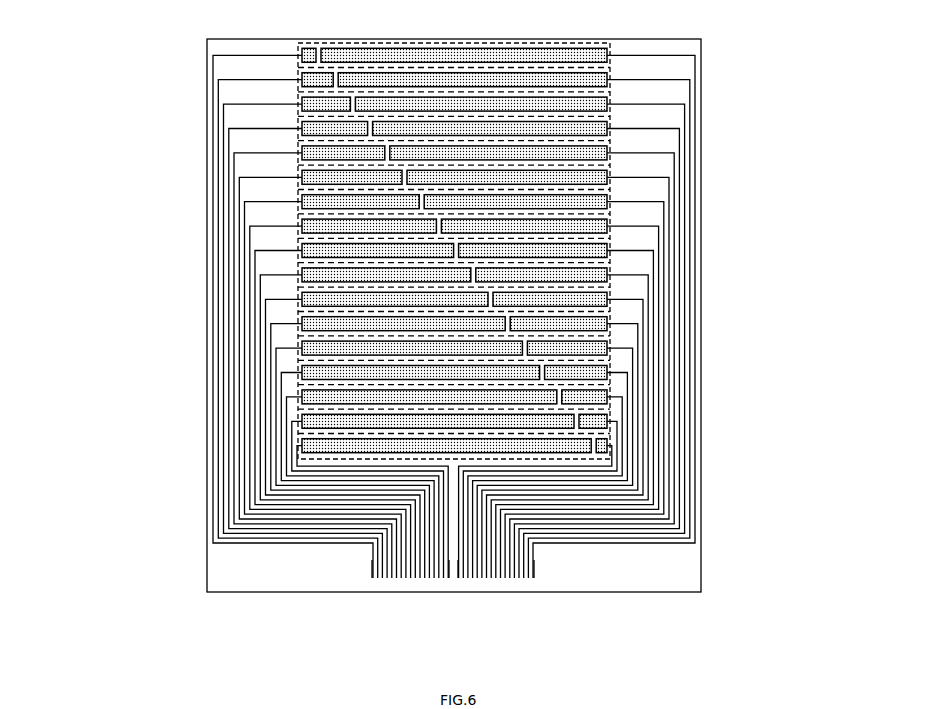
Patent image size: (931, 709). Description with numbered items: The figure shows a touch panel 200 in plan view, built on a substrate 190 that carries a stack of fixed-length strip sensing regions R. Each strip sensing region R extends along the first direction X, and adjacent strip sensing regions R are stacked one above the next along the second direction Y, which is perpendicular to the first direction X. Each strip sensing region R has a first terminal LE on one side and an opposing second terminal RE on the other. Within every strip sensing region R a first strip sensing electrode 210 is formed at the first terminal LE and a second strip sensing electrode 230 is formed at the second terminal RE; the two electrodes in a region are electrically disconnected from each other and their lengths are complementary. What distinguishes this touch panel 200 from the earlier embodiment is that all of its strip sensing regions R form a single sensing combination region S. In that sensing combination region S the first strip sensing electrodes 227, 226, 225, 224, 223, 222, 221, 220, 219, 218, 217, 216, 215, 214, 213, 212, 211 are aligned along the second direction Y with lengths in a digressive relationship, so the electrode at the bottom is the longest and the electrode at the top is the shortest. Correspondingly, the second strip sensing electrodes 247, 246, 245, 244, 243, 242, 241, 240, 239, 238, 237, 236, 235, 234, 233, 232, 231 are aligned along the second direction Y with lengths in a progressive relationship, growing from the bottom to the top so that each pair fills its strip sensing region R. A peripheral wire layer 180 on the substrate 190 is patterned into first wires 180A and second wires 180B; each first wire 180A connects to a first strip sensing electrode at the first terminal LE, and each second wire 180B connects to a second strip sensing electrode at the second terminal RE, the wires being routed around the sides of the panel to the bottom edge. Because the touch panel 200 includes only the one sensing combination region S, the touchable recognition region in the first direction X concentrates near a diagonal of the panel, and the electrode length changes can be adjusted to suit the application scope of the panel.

The touch panel 200 is at (782, 21).
The substrate 190 is at (702, 570).
The first strip sensing electrode 210 is at (362, 313).
The second strip sensing electrode 230 is at (548, 313).
The first strip sensing electrode 211 is at (300, 55).
The first strip sensing electrode 212 is at (300, 80).
The first strip sensing electrode 213 is at (300, 104).
The first strip sensing electrode 214 is at (300, 128).
The first strip sensing electrode 215 is at (300, 153).
The first strip sensing electrode 216 is at (300, 177).
The first strip sensing electrode 217 is at (300, 202).
The first strip sensing electrode 218 is at (300, 226).
The first strip sensing electrode 219 is at (300, 250).
The first strip sensing electrode 220 is at (300, 275).
The first strip sensing electrode 221 is at (300, 299).
The first strip sensing electrode 222 is at (300, 324).
The first strip sensing electrode 223 is at (300, 348).
The first strip sensing electrode 224 is at (300, 372).
The first strip sensing electrode 225 is at (300, 397).
The first strip sensing electrode 226 is at (300, 421).
The first strip sensing electrode 227 is at (300, 446).
The second strip sensing electrode 231 is at (608, 55).
The second strip sensing electrode 232 is at (608, 80).
The second strip sensing electrode 233 is at (608, 104).
The second strip sensing electrode 234 is at (608, 128).
The second sensing electrode 235 is at (608, 153).
The second strip sensing electrode 236 is at (608, 177).
The second strip sensing electrode 237 is at (608, 202).
The second strip sensing electrode 238 is at (608, 226).
The second strip sensing electrode 239 is at (608, 250).
The second strip sensing electrode 240 is at (608, 275).
The second strip sensing electrode 241 is at (608, 299).
The second strip sensing electrode 242 is at (608, 324).
The second strip sensing electrode 243 is at (608, 348).
The second strip sensing electrode 244 is at (608, 372).
The second strip sensing electrode 245 is at (608, 397).
The second strip sensing electrode 246 is at (608, 421).
The second strip sensing electrode 247 is at (608, 446).
The peripheral wire layer 180 is at (453, 588).
The first wires 180A is at (453, 580).
The second wires 180B is at (537, 580).
The sensing combination region S is at (123, 462).
The strip sensing region R is at (784, 45).
The first terminal LE is at (298, 46).
The second terminal RE is at (611, 46).
The first direction X is at (12, 475).
The second direction Y is at (12, 475).